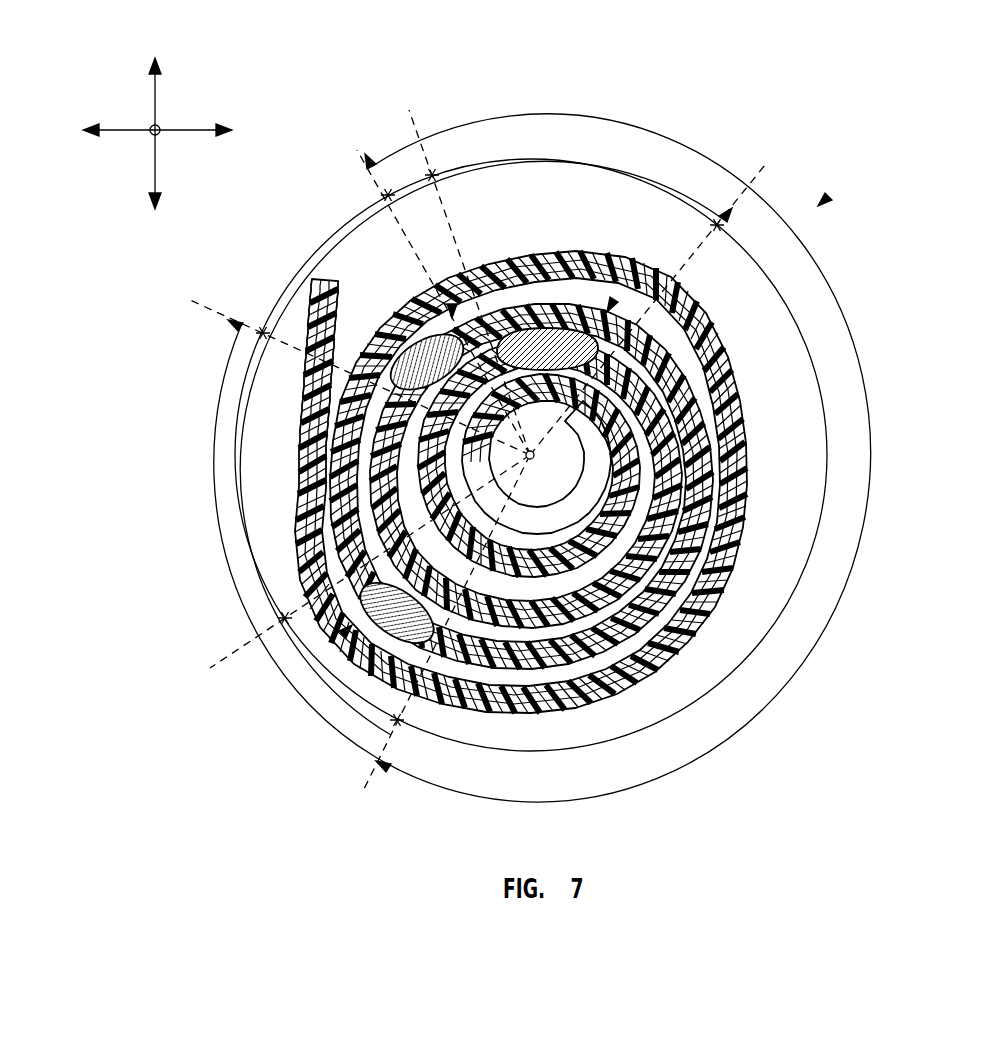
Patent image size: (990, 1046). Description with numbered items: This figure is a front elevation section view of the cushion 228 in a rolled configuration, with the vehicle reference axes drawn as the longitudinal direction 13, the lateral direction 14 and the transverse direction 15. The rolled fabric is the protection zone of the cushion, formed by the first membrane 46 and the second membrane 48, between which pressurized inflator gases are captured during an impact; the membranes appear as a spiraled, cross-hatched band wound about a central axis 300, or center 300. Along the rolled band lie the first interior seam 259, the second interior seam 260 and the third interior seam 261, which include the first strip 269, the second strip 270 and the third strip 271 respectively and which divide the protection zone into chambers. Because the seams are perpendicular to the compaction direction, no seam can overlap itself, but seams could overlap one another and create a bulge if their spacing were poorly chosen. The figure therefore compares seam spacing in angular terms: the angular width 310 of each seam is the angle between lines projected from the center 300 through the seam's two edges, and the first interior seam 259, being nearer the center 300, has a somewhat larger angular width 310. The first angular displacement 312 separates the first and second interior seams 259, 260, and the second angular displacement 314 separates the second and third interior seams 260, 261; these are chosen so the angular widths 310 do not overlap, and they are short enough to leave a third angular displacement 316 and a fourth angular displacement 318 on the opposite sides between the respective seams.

The longitudinal direction 13 is at (150, 126).
The lateral direction 14 is at (182, 144).
The transverse direction 15 is at (158, 98).
The first membrane 46 is at (300, 424).
The second membrane 48 is at (340, 318).
The cushion 228 is at (822, 204).
The first interior seam 259 is at (614, 300).
The second interior seam 260 is at (452, 304).
The third interior seam 261 is at (342, 635).
The first strip 269 is at (531, 361).
The second strip 270 is at (413, 375).
The third strip 271 is at (382, 625).
The central axis 300 is at (535, 456).
The angular width 310 is at (318, 250).
The first angular displacement 312 is at (846, 412).
The second angular displacement 314 is at (786, 689).
The third angular displacement 316 is at (408, 184).
The fourth angular displacement 318 is at (238, 512).